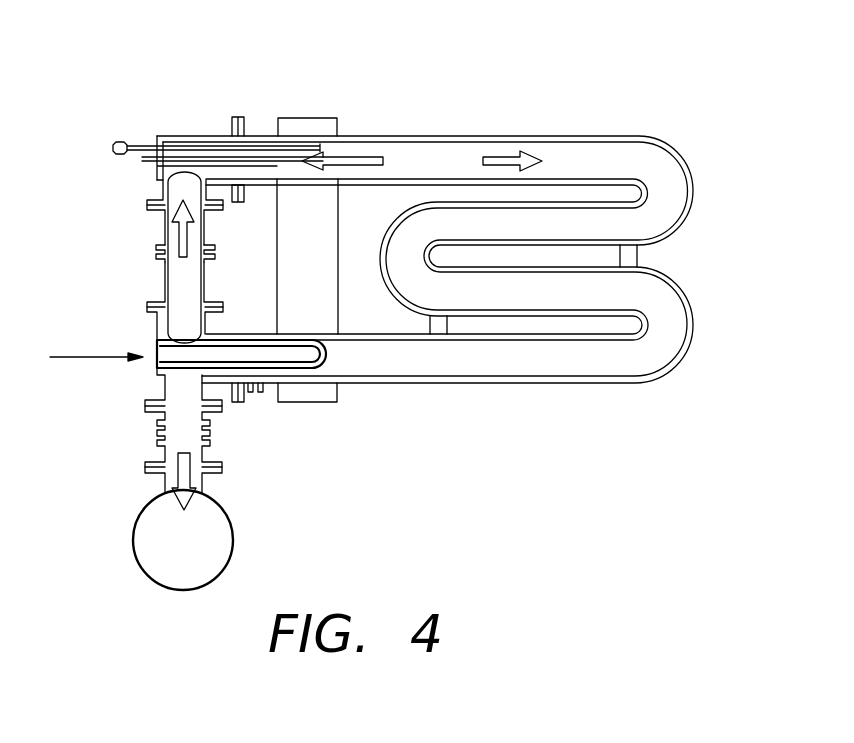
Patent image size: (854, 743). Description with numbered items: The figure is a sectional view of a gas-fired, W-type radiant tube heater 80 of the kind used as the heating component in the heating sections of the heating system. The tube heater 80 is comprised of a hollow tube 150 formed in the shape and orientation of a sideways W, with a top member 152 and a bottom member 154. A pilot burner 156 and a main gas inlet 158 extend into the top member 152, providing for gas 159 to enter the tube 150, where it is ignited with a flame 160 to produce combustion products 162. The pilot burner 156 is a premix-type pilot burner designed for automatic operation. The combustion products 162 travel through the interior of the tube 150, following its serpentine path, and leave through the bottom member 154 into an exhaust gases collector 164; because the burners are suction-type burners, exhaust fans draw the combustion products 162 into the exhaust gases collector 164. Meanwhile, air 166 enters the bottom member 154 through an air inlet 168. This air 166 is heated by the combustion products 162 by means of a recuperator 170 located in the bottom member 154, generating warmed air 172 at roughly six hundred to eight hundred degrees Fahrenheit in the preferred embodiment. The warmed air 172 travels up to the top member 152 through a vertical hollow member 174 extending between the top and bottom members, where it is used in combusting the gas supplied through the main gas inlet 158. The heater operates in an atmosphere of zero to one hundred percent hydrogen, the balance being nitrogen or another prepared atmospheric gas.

The radiant tube heater 80 is at (542, 38).
The hollow tube 150 is at (541, 362).
The top member 152 is at (197, 133).
The bottom member 154 is at (310, 387).
The pilot burner 156 is at (140, 145).
The main gas inlet 158 is at (322, 153).
The gas 159 is at (142, 161).
The flame 160 is at (378, 153).
The combustion products 162 is at (505, 155).
The exhaust gases collector 164 is at (233, 558).
The air 166 is at (188, 368).
The air inlet 168 is at (156, 350).
The recuperator 170 is at (331, 356).
The warmed air 172 is at (190, 236).
The vertical hollow member 174 is at (203, 290).